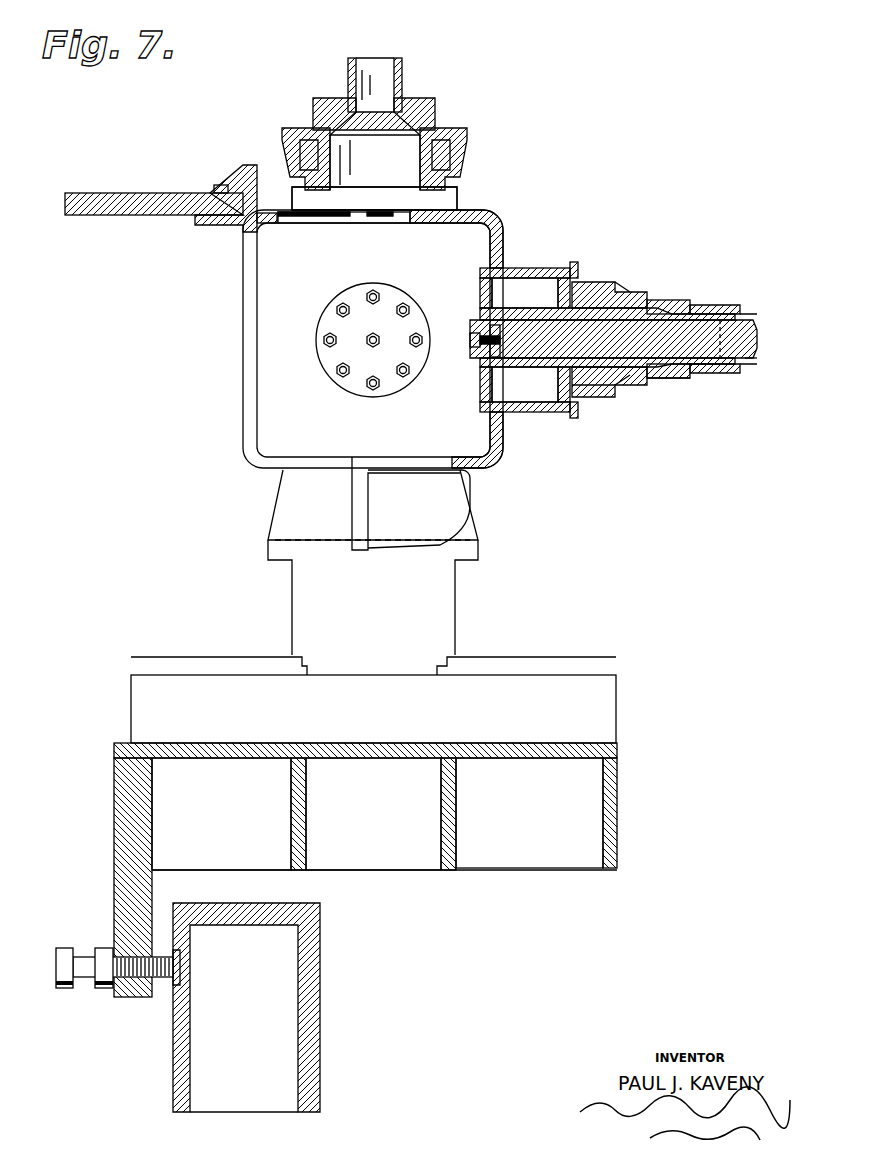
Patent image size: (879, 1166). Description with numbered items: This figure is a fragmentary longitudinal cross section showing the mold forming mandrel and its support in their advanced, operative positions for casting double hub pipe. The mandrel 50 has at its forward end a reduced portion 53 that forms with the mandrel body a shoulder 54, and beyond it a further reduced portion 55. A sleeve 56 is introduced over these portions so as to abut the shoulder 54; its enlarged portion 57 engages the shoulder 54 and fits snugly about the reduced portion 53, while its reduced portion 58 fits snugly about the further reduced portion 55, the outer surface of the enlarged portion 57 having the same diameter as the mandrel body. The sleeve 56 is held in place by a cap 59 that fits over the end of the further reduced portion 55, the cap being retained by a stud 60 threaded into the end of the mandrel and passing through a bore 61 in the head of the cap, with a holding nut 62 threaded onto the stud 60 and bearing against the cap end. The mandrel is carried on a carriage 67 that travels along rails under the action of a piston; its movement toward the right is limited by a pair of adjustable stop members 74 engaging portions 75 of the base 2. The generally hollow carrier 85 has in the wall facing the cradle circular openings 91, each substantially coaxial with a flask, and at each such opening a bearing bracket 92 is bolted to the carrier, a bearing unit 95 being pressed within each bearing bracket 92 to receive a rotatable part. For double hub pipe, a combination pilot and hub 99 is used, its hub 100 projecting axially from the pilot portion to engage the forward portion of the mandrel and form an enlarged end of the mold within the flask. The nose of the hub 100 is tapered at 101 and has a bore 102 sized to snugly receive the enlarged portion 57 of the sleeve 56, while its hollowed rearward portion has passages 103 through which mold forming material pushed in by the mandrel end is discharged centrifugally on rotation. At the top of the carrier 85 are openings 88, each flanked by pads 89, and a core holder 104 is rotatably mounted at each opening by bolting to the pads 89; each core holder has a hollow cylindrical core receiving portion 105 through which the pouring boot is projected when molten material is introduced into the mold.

The base 2 is at (318, 988).
The mandrel 50 is at (757, 320).
The reduced portion 53 is at (740, 334).
The shoulder 54 is at (750, 360).
The further reduced portion 55 is at (597, 335).
The sleeve 56 is at (656, 310).
The enlarged portion 57 is at (700, 364).
The reduced portion of sleeve 58 is at (617, 300).
The cap 59 is at (530, 405).
The stud 60 is at (490, 370).
The bore 61 is at (470, 335).
The holding nut 62 is at (470, 350).
The carriage 67 is at (617, 785).
The adjustable stop members 74 is at (95, 957).
The portions of base 75 is at (170, 988).
The carrier 85 is at (243, 323).
The openings 88 is at (292, 222).
The pads 89 is at (340, 222).
The circular openings 91 is at (482, 268).
The bearing bracket 92 is at (510, 416).
The bearing unit 95 is at (518, 285).
The combination pilot and hub 99 is at (565, 300).
The hub 100 is at (650, 378).
The tapered nose 101 is at (705, 316).
The bore 102 is at (690, 306).
The passages 103 is at (585, 400).
The core holder 104 is at (430, 150).
The hollow cylindrical core receiving portion 105 is at (405, 62).